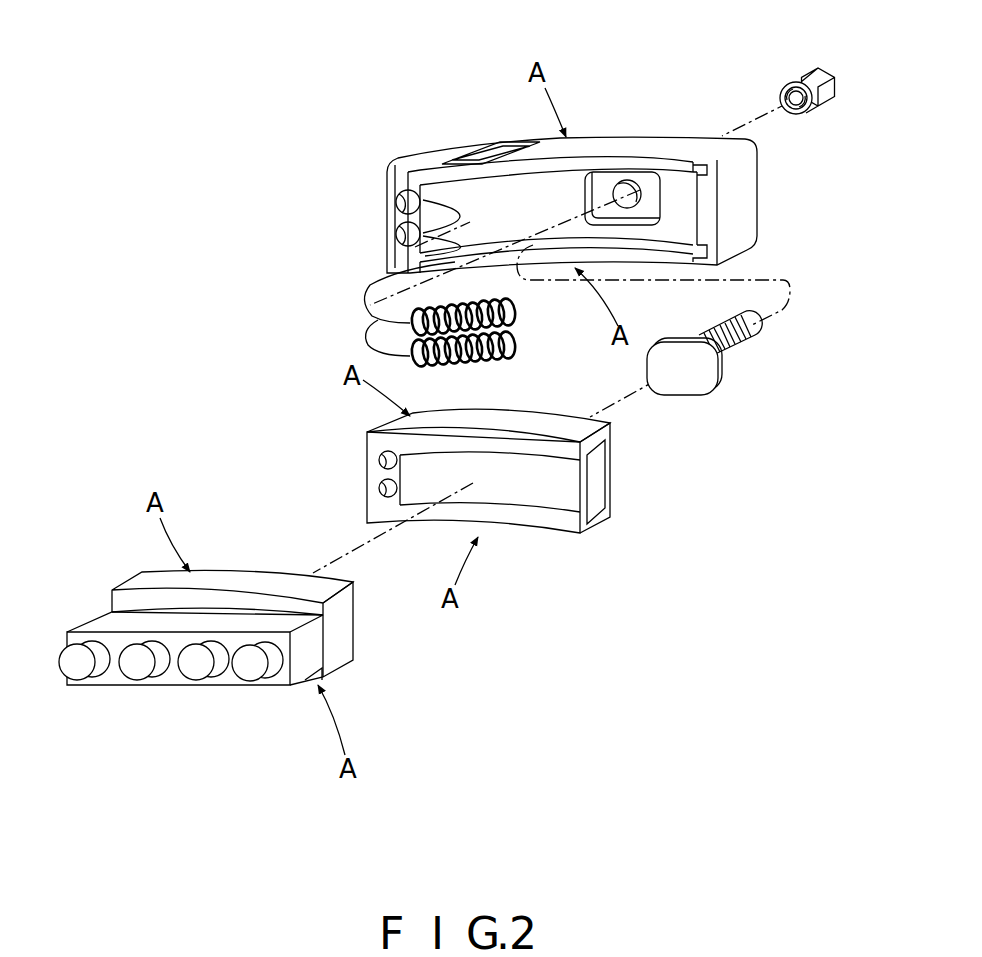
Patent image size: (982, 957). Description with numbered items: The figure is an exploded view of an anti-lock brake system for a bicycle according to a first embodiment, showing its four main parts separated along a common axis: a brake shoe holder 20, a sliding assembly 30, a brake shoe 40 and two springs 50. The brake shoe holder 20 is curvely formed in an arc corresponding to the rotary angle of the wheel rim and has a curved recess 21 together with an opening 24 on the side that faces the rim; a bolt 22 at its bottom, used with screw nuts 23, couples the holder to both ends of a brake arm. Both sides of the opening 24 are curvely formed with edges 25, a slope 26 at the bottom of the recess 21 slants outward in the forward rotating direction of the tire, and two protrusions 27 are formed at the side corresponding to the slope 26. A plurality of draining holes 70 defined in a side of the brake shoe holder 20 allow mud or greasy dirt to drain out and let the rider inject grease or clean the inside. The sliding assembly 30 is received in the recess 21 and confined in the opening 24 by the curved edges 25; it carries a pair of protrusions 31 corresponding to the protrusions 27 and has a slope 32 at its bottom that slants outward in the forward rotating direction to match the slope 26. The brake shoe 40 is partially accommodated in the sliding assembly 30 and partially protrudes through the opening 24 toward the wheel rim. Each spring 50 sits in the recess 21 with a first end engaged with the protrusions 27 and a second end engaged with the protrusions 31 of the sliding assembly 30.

The brake shoe holder 20 is at (598, 145).
The recess 21 is at (698, 206).
The bolt 22 is at (705, 372).
The screw nut 23 is at (818, 78).
The opening 24 is at (738, 257).
The edge 25 is at (612, 185).
The slope 26 is at (485, 190).
The protrusion 27 is at (400, 194).
The draining hole 70 is at (507, 150).
The spring 50 is at (510, 343).
The sliding assembly 30 is at (598, 528).
The protrusion 31 is at (383, 487).
The slope 32 is at (614, 470).
The brake shoe 40 is at (350, 632).